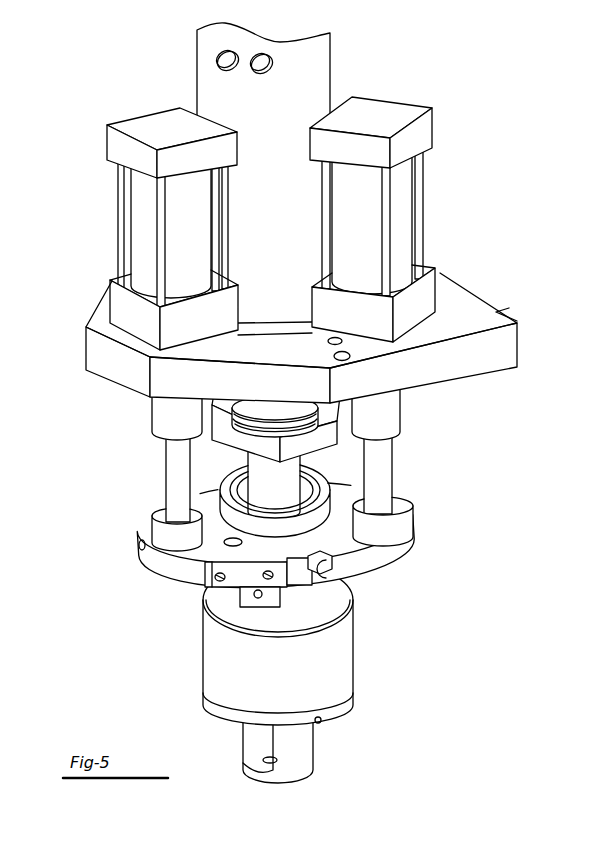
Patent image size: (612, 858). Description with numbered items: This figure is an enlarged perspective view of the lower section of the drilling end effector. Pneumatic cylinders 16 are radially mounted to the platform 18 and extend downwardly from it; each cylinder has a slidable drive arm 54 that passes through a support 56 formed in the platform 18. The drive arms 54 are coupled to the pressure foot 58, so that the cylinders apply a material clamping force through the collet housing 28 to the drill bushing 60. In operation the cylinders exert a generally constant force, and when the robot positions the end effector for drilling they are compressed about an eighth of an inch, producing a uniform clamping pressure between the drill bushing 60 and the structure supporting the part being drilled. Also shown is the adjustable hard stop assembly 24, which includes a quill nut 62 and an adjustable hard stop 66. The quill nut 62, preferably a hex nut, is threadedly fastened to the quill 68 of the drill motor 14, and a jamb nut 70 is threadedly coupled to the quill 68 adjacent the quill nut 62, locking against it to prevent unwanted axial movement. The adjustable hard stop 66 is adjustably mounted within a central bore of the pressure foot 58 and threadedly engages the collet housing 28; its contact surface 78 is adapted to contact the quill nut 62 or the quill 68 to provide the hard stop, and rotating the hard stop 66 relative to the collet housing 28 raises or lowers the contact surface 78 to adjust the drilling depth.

The drill motor 14 is at (330, 65).
The pneumatic cylinders 16 is at (125, 213).
The platform 18 is at (517, 345).
The adjustable hard stop assembly 24 is at (108, 541).
The collet housing 28 is at (353, 656).
The drive arm 54 is at (165, 480).
The support 56 is at (152, 415).
The pressure foot 58 is at (417, 527).
The drill bushing 60 is at (313, 748).
The quill nut 62 is at (337, 403).
The adjustable hard stop 66 is at (322, 520).
The quill 68 is at (250, 410).
The jamb nut 70 is at (212, 437).
The contact surface 78 is at (325, 497).